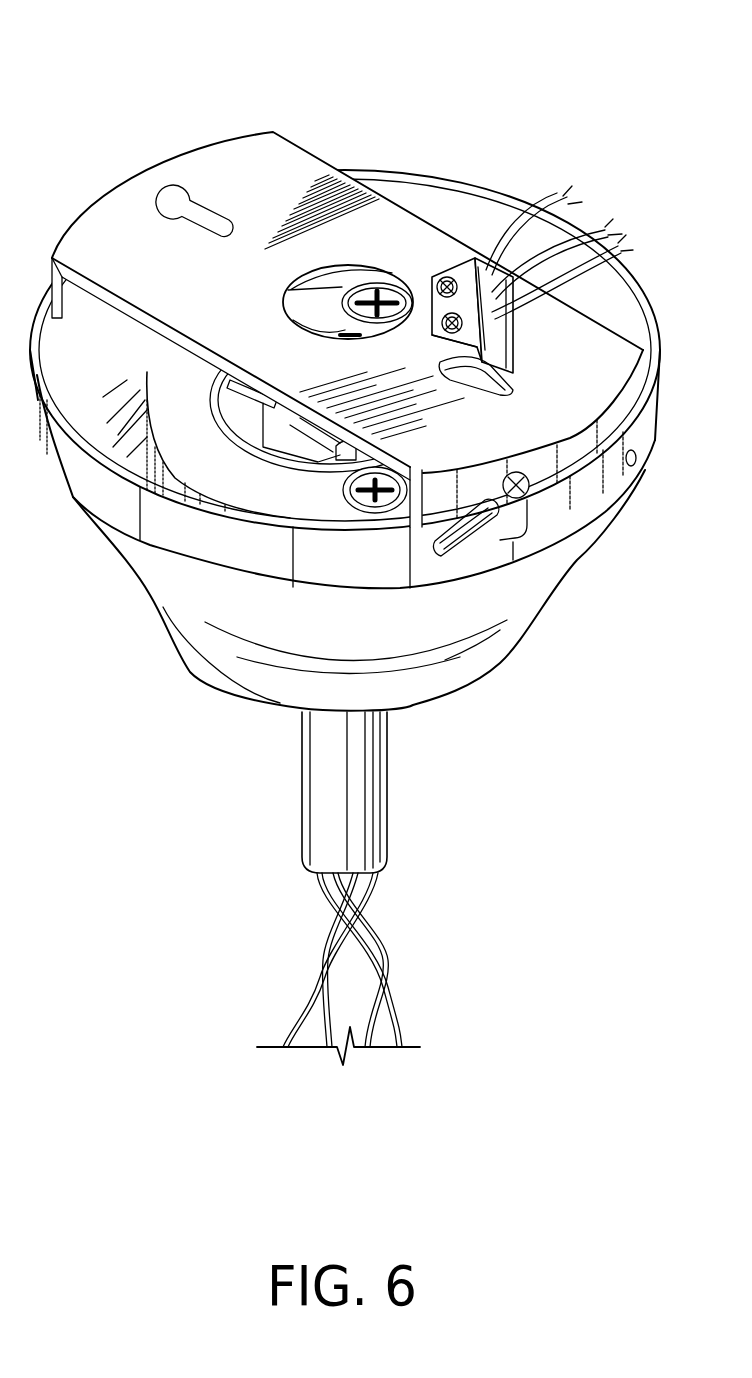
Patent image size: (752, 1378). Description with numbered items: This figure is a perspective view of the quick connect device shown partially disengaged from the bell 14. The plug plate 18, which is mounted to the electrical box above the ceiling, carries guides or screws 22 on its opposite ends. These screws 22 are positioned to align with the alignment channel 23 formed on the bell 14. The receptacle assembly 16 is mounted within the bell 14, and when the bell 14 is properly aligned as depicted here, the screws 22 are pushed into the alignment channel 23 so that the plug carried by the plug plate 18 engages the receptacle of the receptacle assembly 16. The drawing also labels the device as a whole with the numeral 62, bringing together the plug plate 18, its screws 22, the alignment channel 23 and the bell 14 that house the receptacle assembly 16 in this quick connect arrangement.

The bell 14 is at (202, 643).
The receptacle assembly 16 is at (343, 500).
The plug plate 18 is at (480, 443).
The screws 22 is at (503, 485).
The alignment channel 23 is at (472, 545).
The mounting bracket assembly 62 is at (347, 244).